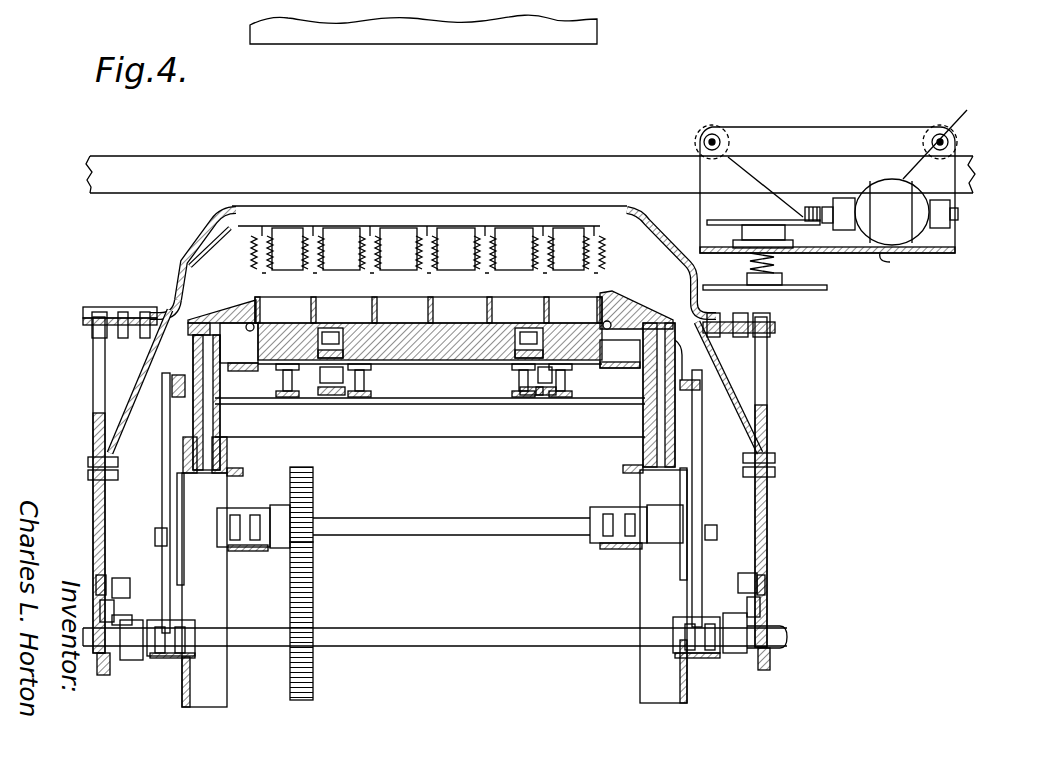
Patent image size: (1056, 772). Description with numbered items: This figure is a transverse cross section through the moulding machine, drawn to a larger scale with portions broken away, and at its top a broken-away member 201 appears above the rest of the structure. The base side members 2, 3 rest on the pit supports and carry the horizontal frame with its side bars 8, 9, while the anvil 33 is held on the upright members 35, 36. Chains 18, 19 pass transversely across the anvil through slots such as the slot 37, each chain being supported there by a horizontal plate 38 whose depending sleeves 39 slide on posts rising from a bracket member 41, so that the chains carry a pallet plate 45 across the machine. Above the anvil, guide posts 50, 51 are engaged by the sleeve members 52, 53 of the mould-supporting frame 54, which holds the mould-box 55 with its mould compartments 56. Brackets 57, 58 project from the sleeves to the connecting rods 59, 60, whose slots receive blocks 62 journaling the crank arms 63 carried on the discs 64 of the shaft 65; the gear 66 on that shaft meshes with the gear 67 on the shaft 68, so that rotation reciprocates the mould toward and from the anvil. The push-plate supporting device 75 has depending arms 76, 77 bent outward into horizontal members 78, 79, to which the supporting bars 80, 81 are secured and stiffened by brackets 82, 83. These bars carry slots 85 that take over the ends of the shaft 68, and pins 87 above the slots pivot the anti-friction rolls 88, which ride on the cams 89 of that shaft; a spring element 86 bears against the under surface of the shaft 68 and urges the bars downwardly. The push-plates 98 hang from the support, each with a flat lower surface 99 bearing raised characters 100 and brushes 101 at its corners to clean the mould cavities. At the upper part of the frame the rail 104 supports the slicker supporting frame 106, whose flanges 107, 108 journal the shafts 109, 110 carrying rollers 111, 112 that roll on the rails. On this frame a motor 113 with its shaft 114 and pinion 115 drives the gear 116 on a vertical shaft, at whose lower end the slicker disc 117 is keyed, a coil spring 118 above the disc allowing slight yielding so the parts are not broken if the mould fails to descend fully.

The feed hopper 201 is at (423, 29).
The rail 104 is at (148, 160).
The upstanding flange 108 is at (957, 148).
The shaft 109 is at (712, 133).
The shaft 110 is at (950, 136).
The roller 111 is at (722, 130).
The roller 112 is at (940, 126).
The upstanding flange 107 is at (736, 165).
The pinion 115 is at (812, 205).
The motor shaft 114 is at (826, 207).
The motor 113 is at (930, 222).
The gear 116 is at (730, 218).
The slicker supporting frame 106 is at (890, 262).
The coil spring 118 is at (782, 271).
The slicker disc 117 is at (827, 288).
The push-plate supporting device 75 is at (525, 212).
The depending arm 76 is at (190, 242).
The depending arm 77 is at (655, 230).
The sleeve member 52 is at (168, 306).
The push-plate 98 is at (272, 268).
The flat lower surface 99 is at (373, 268).
The raised characters 100 is at (470, 272).
The brush 101 is at (440, 248).
The mould compartment 56 is at (312, 294).
The slot 37 is at (375, 310).
The pallet plate 45 is at (470, 320).
The anvil 33 is at (430, 353).
The endless chain 18 is at (340, 330).
The endless chain 19 is at (527, 328).
The mould-box 55 is at (608, 293).
The mould-supporting frame 54 is at (230, 300).
The side bar 9 is at (246, 371).
The side bar 8 is at (616, 368).
The upright member 36 is at (285, 386).
The depending sleeve 39 is at (326, 382).
The bracket member 41 is at (333, 396).
The horizontal plate 38 is at (545, 392).
The upright member 35 is at (398, 437).
The guide post 51 is at (622, 468).
The guide post 50 is at (190, 456).
The bracket 57 is at (170, 380).
The bracket 83 is at (730, 380).
The sleeve member 53 is at (682, 345).
The bracket 58 is at (690, 390).
The connecting rod 59 is at (164, 426).
The connecting rod 60 is at (702, 441).
The disc 64 is at (178, 483).
The side member 2 is at (228, 700).
The side member 3 is at (690, 672).
The shaft 65 is at (432, 517).
The gear 66 is at (315, 493).
The gear 67 is at (315, 605).
The shaft 68 is at (490, 648).
The bracket 82 is at (93, 381).
The supporting bar 80 is at (92, 331).
The horizontal member 78 is at (108, 308).
The supporting bar 81 is at (767, 381).
The horizontal member 79 is at (770, 322).
The crank arm 63 is at (155, 538).
The block 62 is at (158, 531).
The anti-friction roll 88 is at (128, 592).
The pin 87 is at (135, 567).
The elongate slot 85 is at (108, 613).
The cam 89 is at (122, 619).
The nut 86 is at (110, 669).